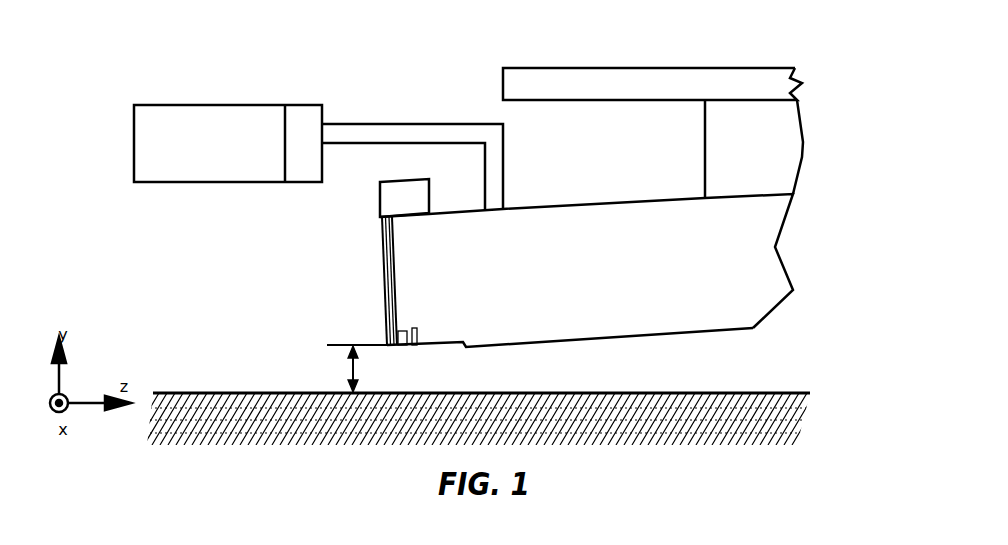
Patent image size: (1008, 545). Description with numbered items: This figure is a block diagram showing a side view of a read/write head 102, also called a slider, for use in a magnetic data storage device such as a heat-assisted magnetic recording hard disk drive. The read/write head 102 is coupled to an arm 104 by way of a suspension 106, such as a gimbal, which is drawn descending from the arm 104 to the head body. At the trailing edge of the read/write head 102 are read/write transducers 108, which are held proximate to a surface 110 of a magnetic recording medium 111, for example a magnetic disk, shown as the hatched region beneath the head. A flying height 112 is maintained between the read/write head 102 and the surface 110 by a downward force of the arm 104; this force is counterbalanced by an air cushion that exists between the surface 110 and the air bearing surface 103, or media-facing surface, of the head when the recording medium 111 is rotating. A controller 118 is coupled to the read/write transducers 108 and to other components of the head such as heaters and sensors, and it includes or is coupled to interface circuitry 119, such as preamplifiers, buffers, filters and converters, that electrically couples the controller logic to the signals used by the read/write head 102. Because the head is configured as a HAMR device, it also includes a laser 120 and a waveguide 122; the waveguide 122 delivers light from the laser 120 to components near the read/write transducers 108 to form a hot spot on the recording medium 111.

The read/write head 102 is at (777, 268).
The air bearing surface 103 is at (517, 342).
The arm 104 is at (758, 68).
The suspension 106 is at (803, 143).
The read/write transducers 108 is at (396, 334).
The surface 110 is at (788, 392).
The magnetic recording medium 111 is at (700, 432).
The flying height 112 is at (346, 368).
The controller 118 is at (173, 104).
The interface circuitry 119 is at (298, 104).
The laser 120 is at (381, 201).
The waveguide 122 is at (383, 246).